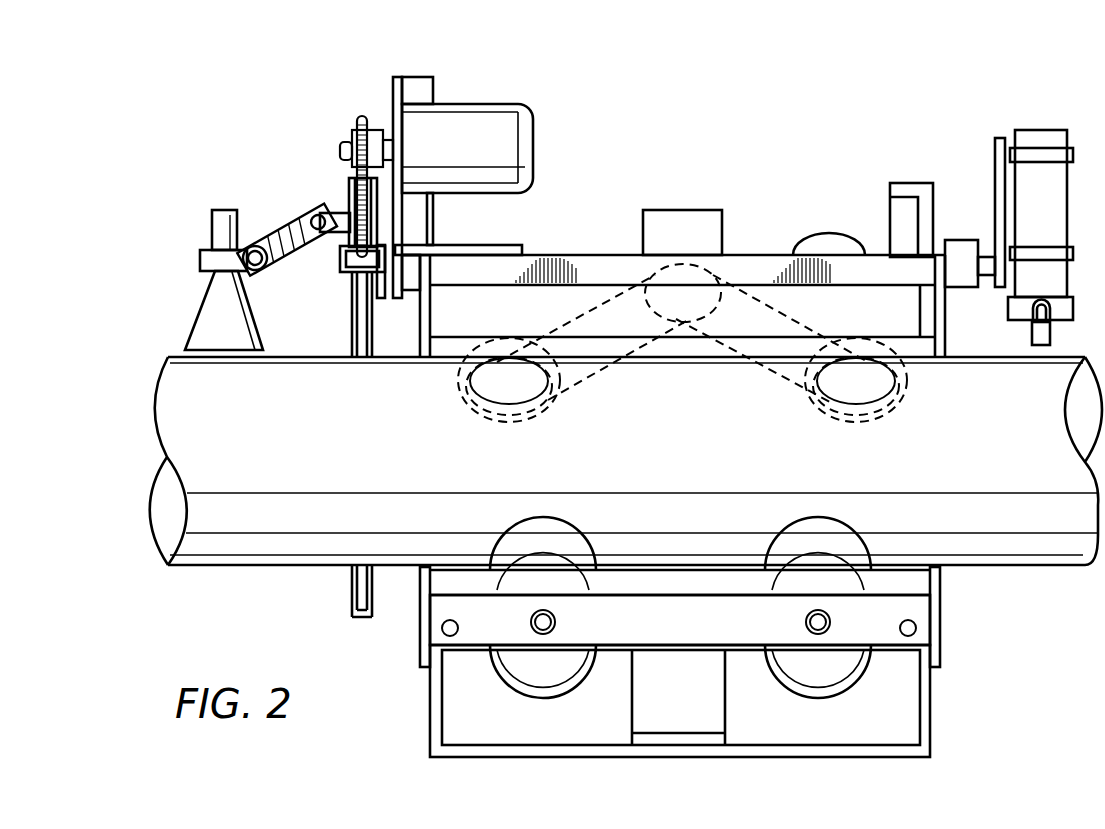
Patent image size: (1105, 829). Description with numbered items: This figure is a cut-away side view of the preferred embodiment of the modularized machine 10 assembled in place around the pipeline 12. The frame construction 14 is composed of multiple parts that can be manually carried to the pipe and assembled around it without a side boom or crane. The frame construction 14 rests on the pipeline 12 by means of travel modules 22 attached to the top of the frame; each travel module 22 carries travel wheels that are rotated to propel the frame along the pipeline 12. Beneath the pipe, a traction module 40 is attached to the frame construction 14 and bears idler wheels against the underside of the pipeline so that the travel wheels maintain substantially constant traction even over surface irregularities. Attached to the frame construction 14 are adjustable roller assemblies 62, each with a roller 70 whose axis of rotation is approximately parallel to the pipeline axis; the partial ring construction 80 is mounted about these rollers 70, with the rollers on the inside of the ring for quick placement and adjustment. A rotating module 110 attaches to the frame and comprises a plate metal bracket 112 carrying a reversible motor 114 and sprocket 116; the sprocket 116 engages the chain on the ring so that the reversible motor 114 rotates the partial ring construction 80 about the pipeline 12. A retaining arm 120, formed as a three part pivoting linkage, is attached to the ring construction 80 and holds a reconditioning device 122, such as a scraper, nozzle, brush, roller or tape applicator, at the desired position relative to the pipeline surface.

The modularized machine 10 is at (734, 255).
The pipeline 12 is at (1071, 568).
The frame construction 14 is at (943, 620).
The travel module 22 is at (765, 255).
The traction module 40 is at (936, 708).
The adjustable roller assembly 62 is at (318, 276).
The roller 70 is at (340, 272).
The partial ring construction 80 is at (348, 192).
The rotating module 110 is at (413, 70).
The plate metal bracket 112 is at (393, 90).
The reversible motor 114 is at (497, 106).
The sprocket 116 is at (355, 125).
The retaining arm 120 is at (285, 225).
The reconditioning device 122 is at (195, 312).